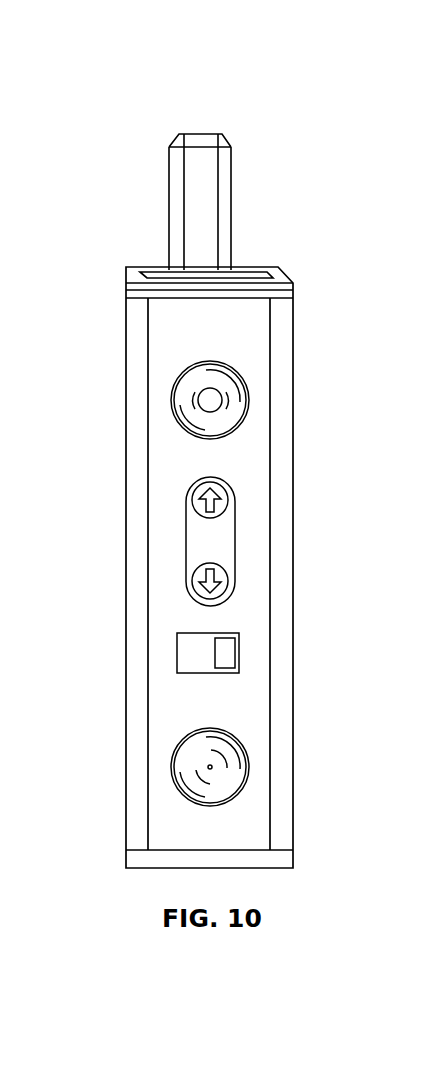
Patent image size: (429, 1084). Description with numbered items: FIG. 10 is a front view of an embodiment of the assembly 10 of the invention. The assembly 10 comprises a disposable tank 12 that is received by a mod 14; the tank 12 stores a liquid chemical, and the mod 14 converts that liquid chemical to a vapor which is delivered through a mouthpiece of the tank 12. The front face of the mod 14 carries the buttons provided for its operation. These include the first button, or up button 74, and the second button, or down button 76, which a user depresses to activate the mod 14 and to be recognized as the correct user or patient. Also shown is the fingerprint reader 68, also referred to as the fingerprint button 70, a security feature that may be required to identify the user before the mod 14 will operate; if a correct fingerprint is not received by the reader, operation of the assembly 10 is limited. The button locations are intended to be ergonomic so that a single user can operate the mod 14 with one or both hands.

The assembly 10 is at (263, 132).
The disposable tank 12 is at (230, 205).
The mod 14 is at (282, 497).
The fingerprint reader 68 is at (188, 772).
The fingerprint button 70 is at (187, 408).
The up button 74 is at (193, 505).
The down button 76 is at (197, 580).